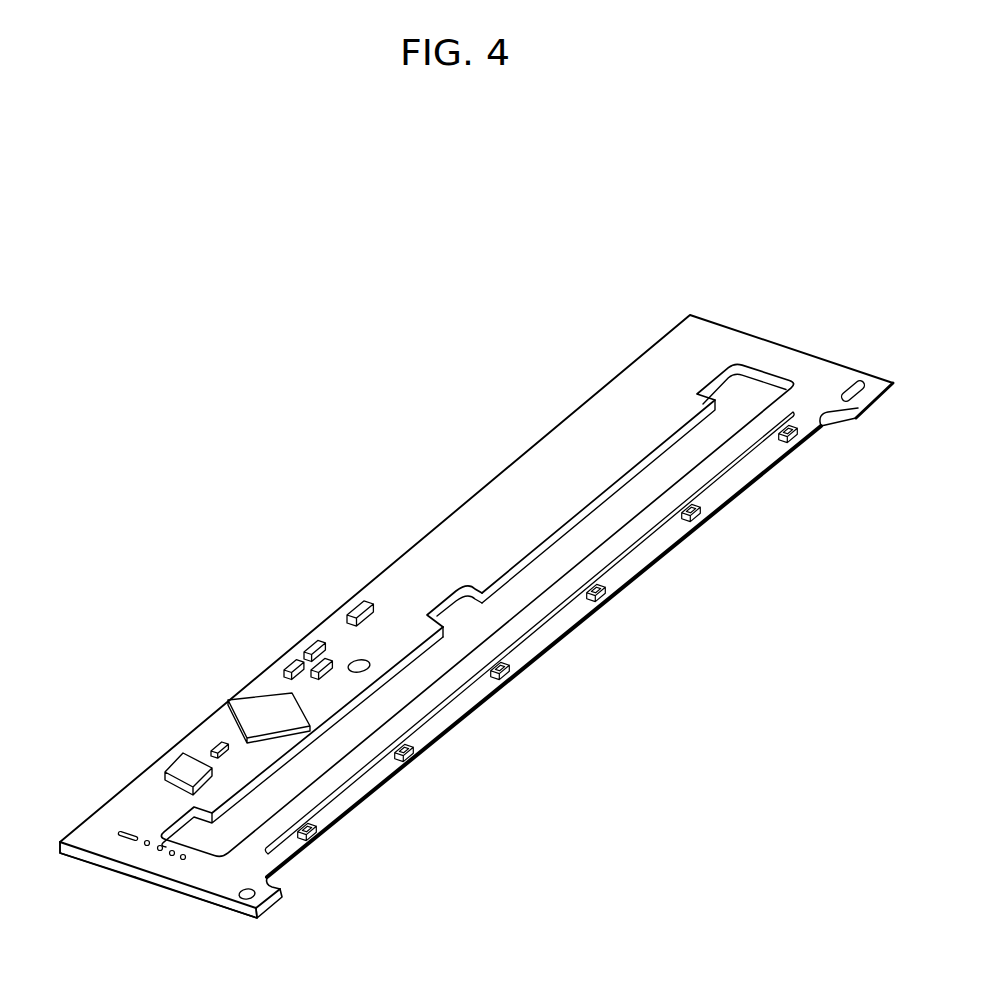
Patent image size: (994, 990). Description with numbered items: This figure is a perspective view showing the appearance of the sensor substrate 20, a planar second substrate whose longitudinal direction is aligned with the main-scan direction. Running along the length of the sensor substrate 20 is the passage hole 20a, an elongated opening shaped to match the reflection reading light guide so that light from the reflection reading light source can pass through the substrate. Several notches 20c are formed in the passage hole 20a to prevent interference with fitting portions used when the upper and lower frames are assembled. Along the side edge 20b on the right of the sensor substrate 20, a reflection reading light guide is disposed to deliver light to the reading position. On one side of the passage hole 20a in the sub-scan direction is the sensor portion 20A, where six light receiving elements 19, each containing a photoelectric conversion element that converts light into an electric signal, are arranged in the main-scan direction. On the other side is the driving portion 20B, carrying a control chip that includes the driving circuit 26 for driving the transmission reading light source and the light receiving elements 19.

The light receiving element 19 is at (330, 798).
The sensor substrate 20 is at (800, 330).
The passage hole 20a is at (614, 505).
The side edge 20b is at (297, 861).
The notch 20c is at (451, 608).
The sensor portion 20A is at (231, 925).
The driving portion 20B is at (136, 889).
The driving circuit 26 is at (347, 587).